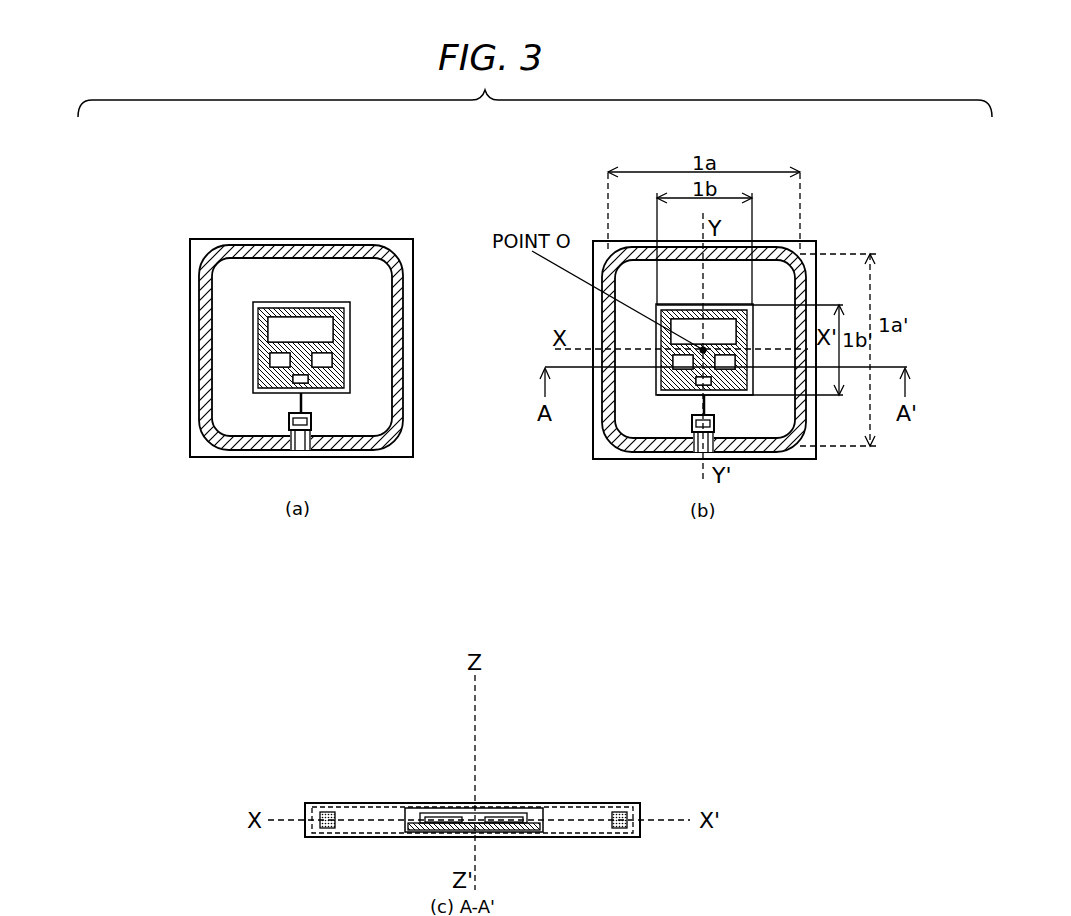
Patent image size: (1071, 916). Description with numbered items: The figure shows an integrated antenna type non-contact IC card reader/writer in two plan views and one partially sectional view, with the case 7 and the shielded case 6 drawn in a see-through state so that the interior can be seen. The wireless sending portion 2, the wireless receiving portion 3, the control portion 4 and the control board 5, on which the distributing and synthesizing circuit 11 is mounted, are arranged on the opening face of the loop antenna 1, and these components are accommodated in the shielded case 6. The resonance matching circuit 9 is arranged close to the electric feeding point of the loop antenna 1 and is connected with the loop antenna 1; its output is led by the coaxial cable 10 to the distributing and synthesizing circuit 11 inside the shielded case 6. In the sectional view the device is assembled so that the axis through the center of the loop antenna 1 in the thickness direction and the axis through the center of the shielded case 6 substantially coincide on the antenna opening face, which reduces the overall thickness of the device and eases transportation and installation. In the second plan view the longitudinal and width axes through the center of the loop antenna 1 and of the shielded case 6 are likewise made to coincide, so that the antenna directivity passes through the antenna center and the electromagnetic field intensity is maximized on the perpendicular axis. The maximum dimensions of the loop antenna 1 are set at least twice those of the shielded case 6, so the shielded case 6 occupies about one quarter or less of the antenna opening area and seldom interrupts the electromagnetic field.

The loop antenna 1 is at (313, 252).
The wireless sending portion 2 is at (255, 355).
The wireless receiving portion 3 is at (325, 360).
The control portion 4 is at (256, 310).
The control board 5 is at (291, 325).
The shielded case 6 is at (349, 392).
The case 7 is at (198, 250).
The resonance matching circuit 9 is at (288, 422).
The coaxial cable 10 is at (305, 403).
The distributing and synthesizing circuit 11 is at (302, 380).